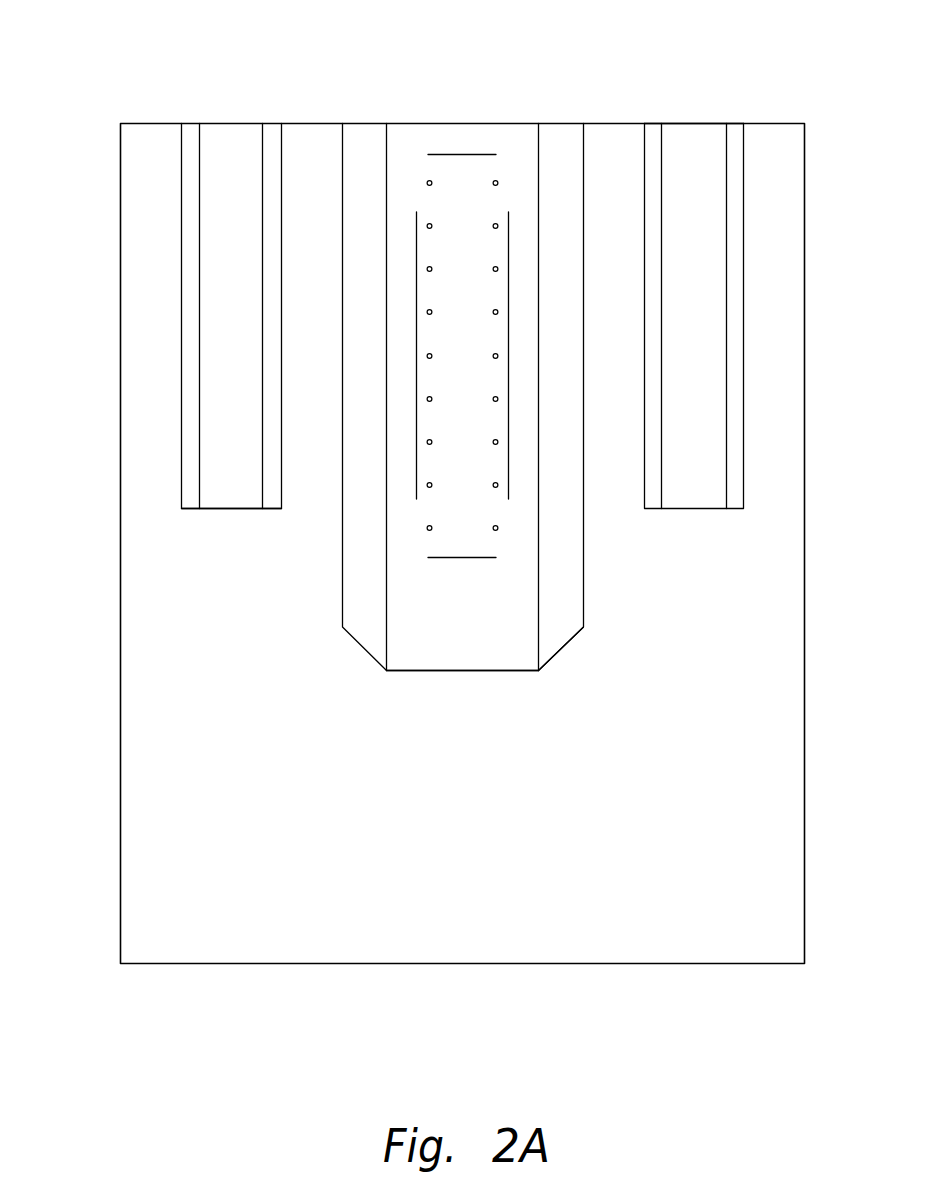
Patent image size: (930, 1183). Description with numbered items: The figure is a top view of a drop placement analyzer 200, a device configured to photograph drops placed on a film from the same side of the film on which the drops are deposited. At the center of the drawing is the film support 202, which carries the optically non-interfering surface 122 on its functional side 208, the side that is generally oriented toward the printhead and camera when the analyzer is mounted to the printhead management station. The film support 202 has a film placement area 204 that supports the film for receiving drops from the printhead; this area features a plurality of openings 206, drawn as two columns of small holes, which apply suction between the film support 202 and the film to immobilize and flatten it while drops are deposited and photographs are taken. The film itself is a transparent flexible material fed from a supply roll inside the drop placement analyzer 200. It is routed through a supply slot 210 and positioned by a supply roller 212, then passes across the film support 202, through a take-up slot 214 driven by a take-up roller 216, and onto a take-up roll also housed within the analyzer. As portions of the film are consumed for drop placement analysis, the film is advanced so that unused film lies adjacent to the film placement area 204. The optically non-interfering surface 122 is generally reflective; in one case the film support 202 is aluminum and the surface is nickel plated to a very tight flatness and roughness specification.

The drop placement analyzer 200 is at (138, 33).
The optically non-interfering surface 122 is at (538, 176).
The film support 202 is at (417, 671).
The film placement area 204 is at (465, 376).
The openings 206 is at (461, 153).
The functional side 208 is at (501, 660).
The supply slot 210 is at (744, 267).
The supply roller 212 is at (692, 123).
The take-up slot 214 is at (181, 265).
The take-up roller 216 is at (233, 509).